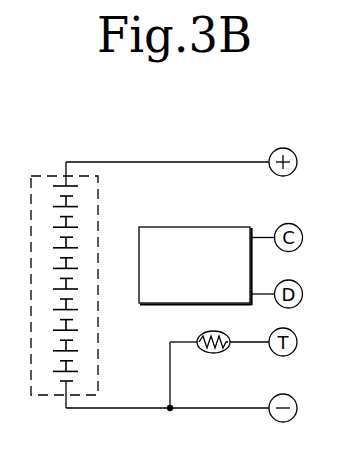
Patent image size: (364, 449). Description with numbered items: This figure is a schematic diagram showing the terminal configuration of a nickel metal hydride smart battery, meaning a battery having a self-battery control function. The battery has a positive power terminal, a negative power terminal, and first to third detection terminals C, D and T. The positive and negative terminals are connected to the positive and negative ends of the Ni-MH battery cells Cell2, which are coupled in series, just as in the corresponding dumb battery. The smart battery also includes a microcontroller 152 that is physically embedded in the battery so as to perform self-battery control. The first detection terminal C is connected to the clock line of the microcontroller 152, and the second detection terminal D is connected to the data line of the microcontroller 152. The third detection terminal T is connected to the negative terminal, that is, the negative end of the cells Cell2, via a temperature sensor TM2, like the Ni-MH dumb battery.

The microcontroller 152 is at (220, 227).
The Ni-MH battery cells Cell2 is at (98, 176).
The temperature sensor TM2 is at (219, 359).